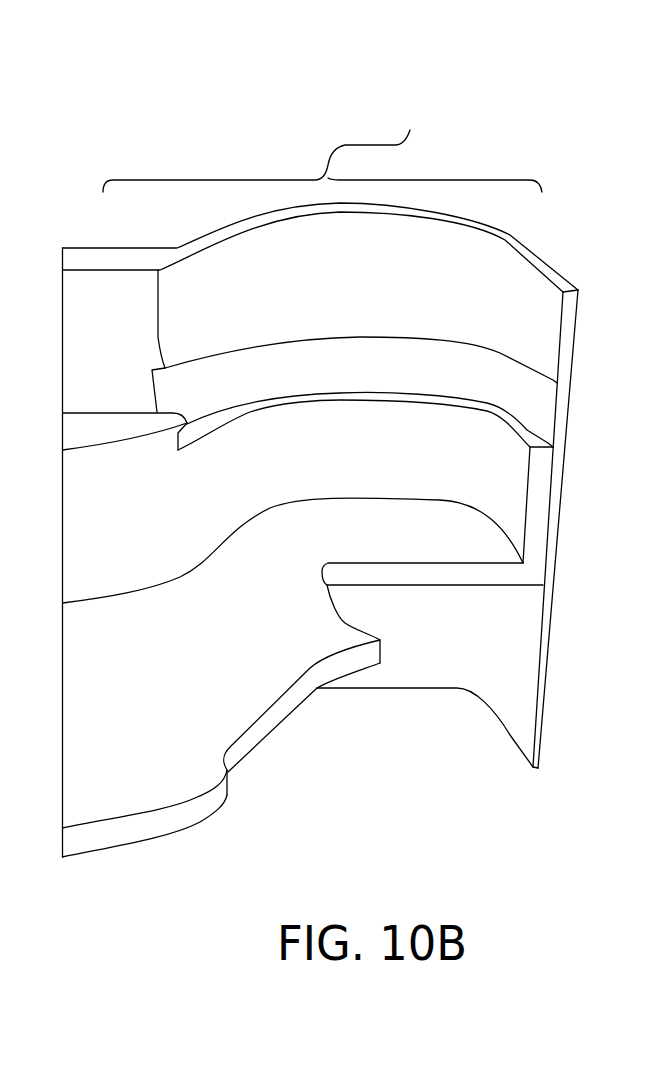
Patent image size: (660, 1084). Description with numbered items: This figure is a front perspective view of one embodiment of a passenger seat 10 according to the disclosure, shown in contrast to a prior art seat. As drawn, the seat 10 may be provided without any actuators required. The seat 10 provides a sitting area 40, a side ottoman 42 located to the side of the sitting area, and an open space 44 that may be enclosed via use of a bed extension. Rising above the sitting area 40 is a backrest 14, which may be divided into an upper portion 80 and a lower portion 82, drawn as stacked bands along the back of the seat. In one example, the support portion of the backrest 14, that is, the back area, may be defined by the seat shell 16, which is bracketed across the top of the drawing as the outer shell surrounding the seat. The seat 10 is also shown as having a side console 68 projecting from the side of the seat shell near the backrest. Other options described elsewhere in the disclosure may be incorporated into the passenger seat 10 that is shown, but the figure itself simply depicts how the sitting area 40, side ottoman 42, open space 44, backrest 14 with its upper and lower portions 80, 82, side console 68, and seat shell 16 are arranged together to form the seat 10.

The passenger seat 10 is at (140, 158).
The seat shell 16 is at (322, 145).
The backrest 14 is at (422, 267).
The upper portion 80 is at (530, 317).
The lower portion 82 is at (507, 483).
The sitting area 40 is at (423, 548).
The side ottoman 42 is at (180, 715).
The open space 44 is at (443, 653).
The side console 68 is at (97, 427).